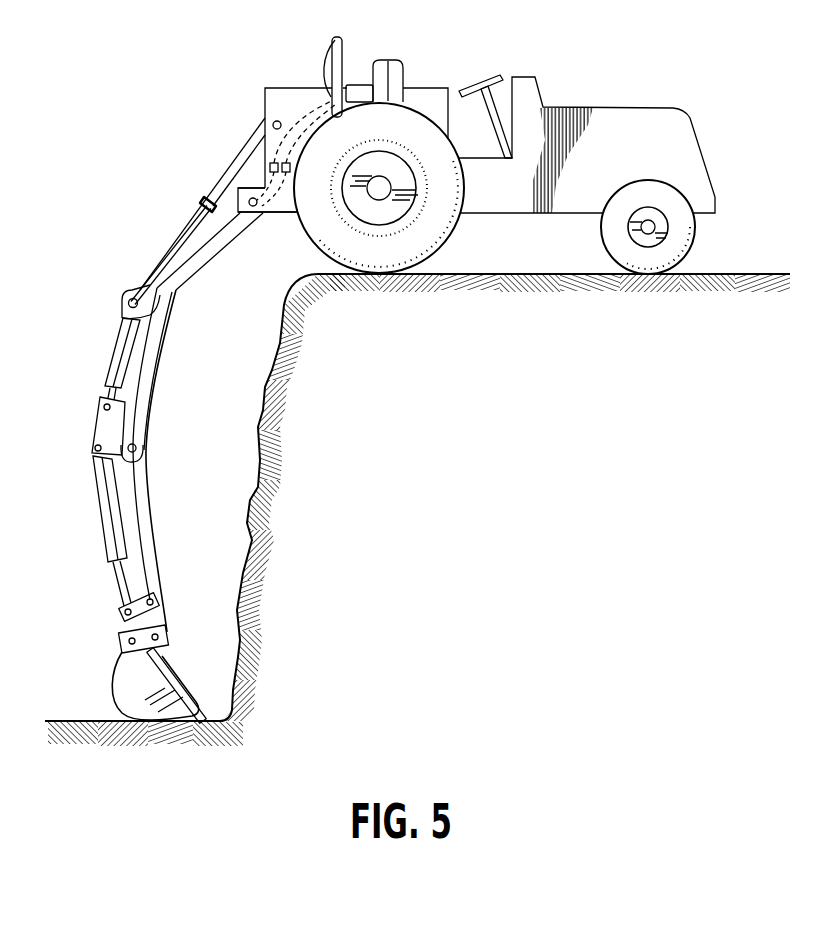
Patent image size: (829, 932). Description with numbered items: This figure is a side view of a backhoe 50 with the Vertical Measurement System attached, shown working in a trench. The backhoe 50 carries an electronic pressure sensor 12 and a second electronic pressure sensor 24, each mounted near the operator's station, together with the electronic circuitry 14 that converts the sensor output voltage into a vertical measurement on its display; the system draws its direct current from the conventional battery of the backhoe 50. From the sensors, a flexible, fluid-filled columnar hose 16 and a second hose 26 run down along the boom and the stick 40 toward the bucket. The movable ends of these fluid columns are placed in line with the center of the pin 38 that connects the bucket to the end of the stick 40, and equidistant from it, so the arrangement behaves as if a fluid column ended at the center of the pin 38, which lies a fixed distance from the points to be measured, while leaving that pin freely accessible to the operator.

The electronic pressure sensor 12 is at (268, 168).
The electronic circuitry 14 is at (343, 52).
The columnar hose 16 is at (123, 315).
The second electronic pressure sensor 24 is at (287, 214).
The hose 26 is at (165, 568).
The pin 38 is at (167, 638).
The stick 40 is at (148, 493).
The backhoe 50 is at (587, 108).